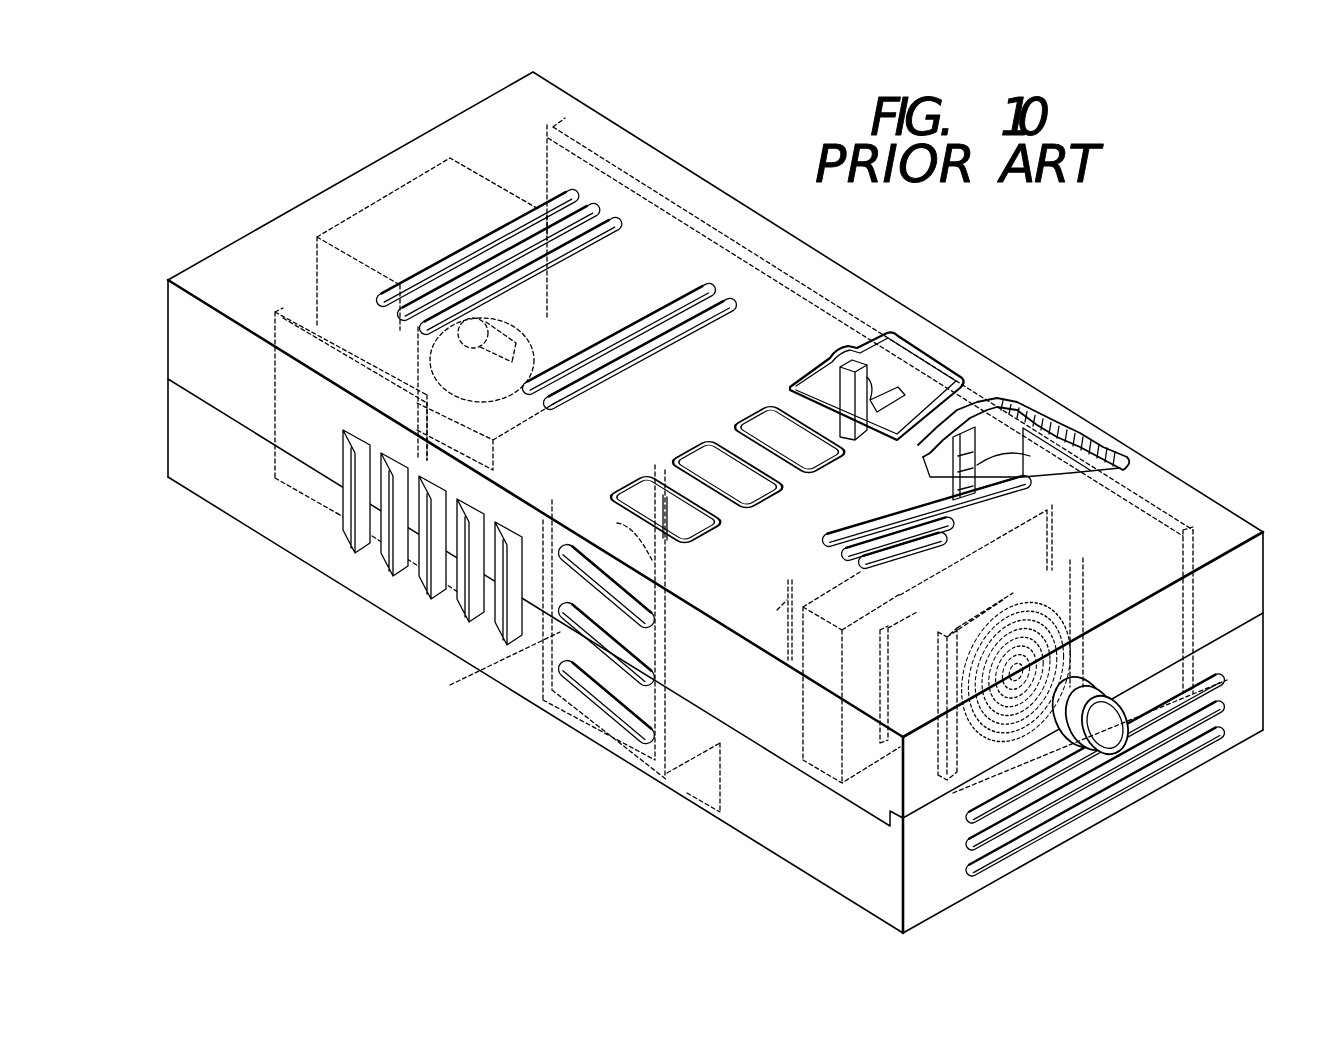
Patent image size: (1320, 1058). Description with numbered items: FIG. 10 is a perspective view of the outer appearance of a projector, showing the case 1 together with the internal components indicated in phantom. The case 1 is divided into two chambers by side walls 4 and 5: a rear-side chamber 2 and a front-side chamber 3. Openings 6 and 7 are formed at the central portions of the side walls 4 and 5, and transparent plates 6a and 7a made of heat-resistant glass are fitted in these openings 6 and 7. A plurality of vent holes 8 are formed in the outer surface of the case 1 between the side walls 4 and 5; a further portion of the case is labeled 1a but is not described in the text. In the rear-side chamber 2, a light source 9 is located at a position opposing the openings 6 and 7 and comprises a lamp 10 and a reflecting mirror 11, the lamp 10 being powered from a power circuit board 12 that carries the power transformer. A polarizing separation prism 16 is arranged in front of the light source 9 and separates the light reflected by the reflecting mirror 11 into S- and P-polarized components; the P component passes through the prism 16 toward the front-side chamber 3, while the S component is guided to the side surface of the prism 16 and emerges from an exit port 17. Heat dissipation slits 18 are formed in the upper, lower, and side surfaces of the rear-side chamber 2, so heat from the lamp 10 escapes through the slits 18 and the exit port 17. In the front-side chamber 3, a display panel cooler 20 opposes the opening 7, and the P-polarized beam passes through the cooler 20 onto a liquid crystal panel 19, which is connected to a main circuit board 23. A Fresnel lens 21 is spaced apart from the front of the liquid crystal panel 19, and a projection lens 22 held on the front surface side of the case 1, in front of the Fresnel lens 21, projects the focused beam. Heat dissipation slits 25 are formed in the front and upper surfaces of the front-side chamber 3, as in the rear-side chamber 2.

The case 1 is at (1243, 513).
The side wall of housing 1a is at (567, 653).
The rear-side chamber 2 is at (733, 232).
The front-side chamber 3 is at (813, 850).
The side wall 4 is at (417, 588).
The side wall 5 is at (695, 740).
The opening 6 is at (732, 483).
The transparent plate 6a is at (619, 535).
The opening 7 is at (781, 577).
The transparent plate 7a is at (766, 616).
The vent holes 8 is at (730, 483).
The light source 9 is at (504, 193).
The lamp 10 is at (507, 363).
The reflecting mirror 11 is at (520, 313).
The power circuit board 12 is at (273, 390).
The polarizing separation prism 16 is at (677, 377).
The exit port 17 is at (513, 532).
The heat dissipation slits 18 is at (410, 312).
The liquid crystal panel 19 is at (917, 665).
The display panel cooler 20 is at (813, 723).
The Fresnel lens 21 is at (1060, 573).
The projection lens 22 is at (1103, 733).
The main circuit board 23 is at (1093, 457).
The heat dissipation slits 25 is at (880, 568).